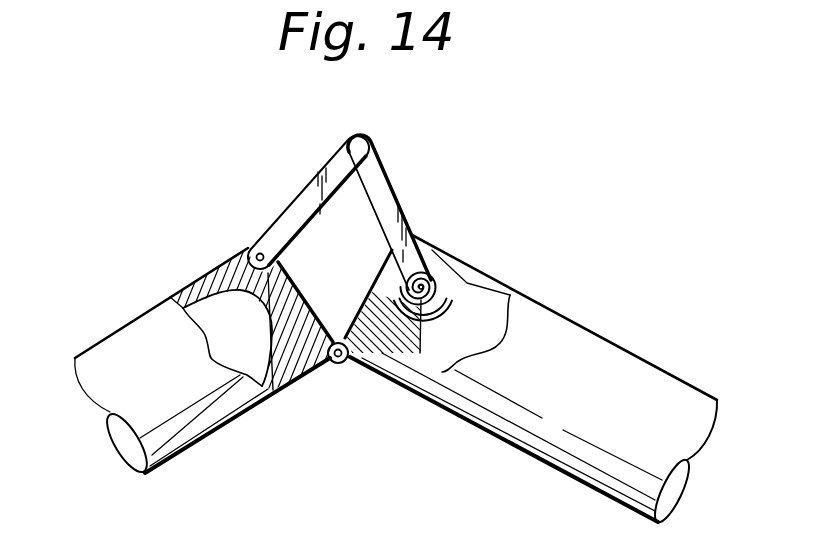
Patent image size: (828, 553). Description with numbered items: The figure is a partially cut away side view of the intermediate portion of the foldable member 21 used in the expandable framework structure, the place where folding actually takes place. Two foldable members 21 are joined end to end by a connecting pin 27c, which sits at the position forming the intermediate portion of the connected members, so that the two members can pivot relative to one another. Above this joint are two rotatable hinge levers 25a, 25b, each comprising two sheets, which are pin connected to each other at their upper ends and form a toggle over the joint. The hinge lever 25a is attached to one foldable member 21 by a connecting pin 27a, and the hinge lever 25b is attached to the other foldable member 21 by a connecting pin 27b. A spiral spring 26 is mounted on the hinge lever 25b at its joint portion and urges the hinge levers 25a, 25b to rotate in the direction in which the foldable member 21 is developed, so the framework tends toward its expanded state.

The foldable member 21 is at (228, 418).
The hinge lever 25a is at (312, 190).
The hinge lever 25b is at (388, 187).
The spiral spring 26 is at (447, 302).
The connecting pin 27a is at (247, 246).
The connecting pin 27b is at (432, 265).
The connecting pin 27c is at (333, 363).